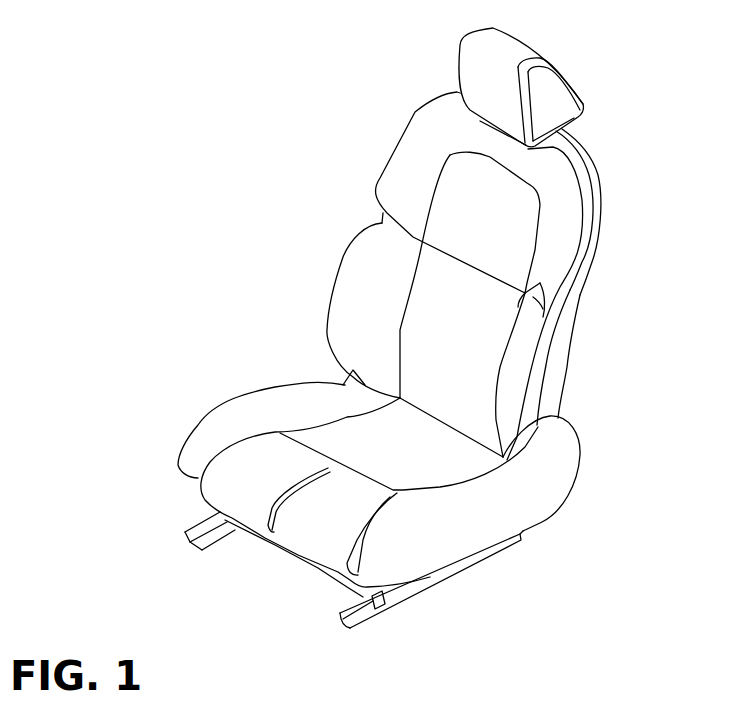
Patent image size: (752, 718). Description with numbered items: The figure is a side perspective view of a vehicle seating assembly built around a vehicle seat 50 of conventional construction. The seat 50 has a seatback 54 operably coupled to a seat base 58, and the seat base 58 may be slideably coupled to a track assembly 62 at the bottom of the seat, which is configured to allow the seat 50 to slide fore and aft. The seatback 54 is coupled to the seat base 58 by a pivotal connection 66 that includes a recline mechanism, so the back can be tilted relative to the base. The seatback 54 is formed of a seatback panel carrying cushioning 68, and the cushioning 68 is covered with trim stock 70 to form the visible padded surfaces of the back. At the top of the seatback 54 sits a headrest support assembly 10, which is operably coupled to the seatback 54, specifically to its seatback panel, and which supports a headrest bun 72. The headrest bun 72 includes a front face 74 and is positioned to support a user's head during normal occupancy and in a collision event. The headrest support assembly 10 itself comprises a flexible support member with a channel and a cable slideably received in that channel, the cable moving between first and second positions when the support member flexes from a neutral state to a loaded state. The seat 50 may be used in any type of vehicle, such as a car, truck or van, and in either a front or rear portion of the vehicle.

The headrest support assembly 10 is at (597, 112).
The vehicle seat 50 is at (260, 173).
The seatback 54 is at (591, 224).
The seat base 58 is at (232, 417).
The track assembly 62 is at (370, 617).
The pivotal connection 66 is at (563, 403).
The cushioning 68 is at (542, 267).
The trim stock 70 is at (540, 283).
The headrest bun 72 is at (517, 47).
The front face 74 is at (483, 86).